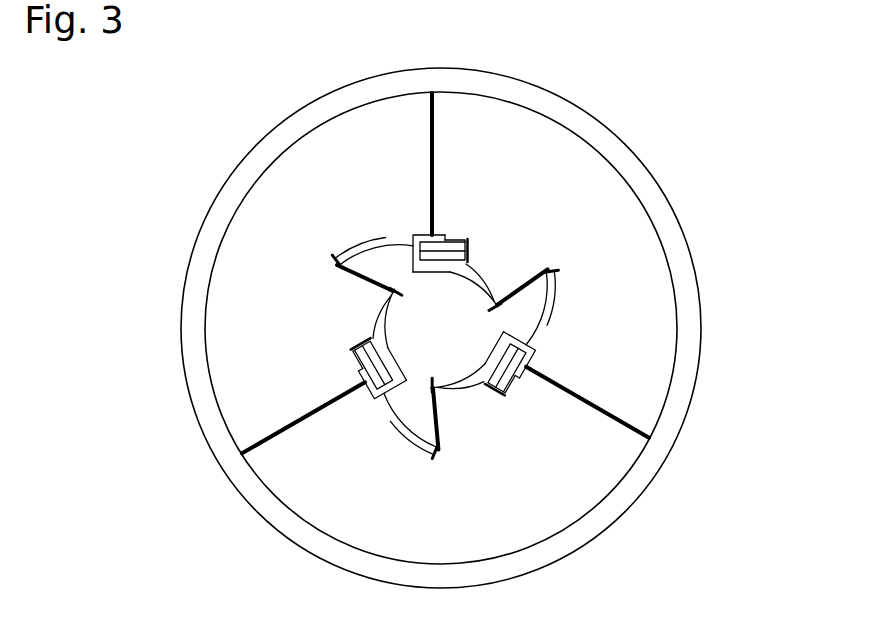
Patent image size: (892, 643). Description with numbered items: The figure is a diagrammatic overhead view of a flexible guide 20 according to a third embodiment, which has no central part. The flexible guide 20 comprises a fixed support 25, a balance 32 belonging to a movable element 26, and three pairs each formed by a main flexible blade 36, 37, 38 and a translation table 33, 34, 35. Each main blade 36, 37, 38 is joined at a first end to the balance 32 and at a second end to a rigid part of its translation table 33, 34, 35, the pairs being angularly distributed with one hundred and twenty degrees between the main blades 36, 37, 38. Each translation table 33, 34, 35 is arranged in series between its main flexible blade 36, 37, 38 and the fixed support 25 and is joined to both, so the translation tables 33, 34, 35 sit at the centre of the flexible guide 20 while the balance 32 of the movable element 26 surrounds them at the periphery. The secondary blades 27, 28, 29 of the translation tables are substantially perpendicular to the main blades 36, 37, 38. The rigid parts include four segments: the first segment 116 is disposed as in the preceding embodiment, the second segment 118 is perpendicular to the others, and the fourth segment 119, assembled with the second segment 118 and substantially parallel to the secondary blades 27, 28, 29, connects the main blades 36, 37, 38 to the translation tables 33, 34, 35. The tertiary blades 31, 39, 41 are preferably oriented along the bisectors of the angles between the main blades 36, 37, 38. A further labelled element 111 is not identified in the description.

The flexible guide 20 is at (119, 115).
The movable element 26 is at (708, 202).
The balance 32 is at (408, 85).
The main flexible blade 36 is at (433, 140).
The main flexible blade 37 is at (298, 440).
The main flexible blade 38 is at (620, 420).
The first segment 116 is at (343, 253).
The tertiary blade 31 is at (398, 287).
The curved blade 111 is at (530, 263).
The tertiary blade 39 is at (533, 264).
The tertiary blade 41 is at (443, 436).
The translation table 33 is at (405, 208).
The translation table 34 is at (562, 347).
The translation table 35 is at (356, 415).
The second segment 118 is at (390, 251).
The fourth segment 119 is at (452, 236).
The secondary blade 29 is at (482, 264).
The fixed support 25 is at (505, 245).
The secondary blade 27 is at (360, 362).
The secondary blade 28 is at (500, 378).